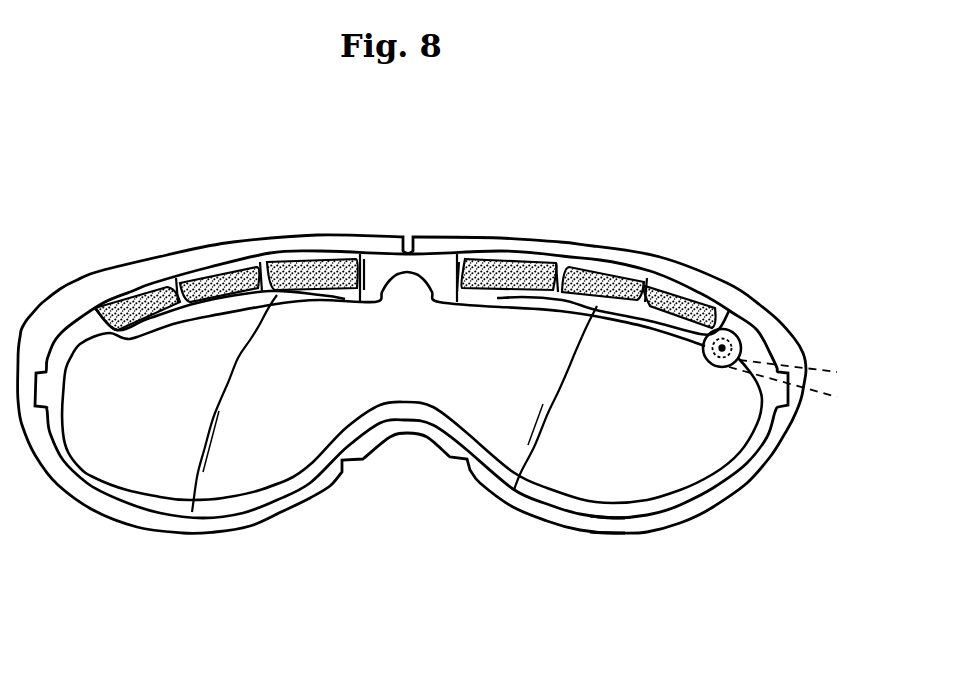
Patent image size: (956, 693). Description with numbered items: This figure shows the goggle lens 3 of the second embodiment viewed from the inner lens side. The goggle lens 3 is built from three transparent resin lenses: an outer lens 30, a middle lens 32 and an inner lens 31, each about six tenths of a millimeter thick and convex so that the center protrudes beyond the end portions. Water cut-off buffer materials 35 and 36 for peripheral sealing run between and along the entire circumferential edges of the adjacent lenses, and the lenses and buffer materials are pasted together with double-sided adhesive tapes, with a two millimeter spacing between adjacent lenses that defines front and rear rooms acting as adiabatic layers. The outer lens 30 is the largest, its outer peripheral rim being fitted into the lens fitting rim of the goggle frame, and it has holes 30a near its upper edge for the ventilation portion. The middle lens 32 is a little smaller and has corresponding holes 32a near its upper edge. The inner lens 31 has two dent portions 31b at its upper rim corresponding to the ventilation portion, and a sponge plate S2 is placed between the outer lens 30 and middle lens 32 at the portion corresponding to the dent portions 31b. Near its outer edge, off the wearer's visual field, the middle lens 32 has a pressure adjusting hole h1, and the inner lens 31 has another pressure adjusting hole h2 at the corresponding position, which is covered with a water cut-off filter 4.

The goggle lens 3 is at (753, 274).
The water cut-off filter 4 is at (738, 342).
The outer lens 30 is at (800, 332).
The holes 30a is at (334, 258).
The inner lens 31 is at (718, 447).
The dent portions 31b is at (182, 303).
The middle lens 32 is at (678, 288).
The holes 32a is at (283, 267).
The sponge plate S2 is at (220, 278).
The pressure adjusting hole h1 is at (804, 369).
The pressure adjusting hole h2 is at (799, 390).
The water cut-off buffer material 35 is at (615, 510).
The water cut-off buffer material 36 is at (615, 510).